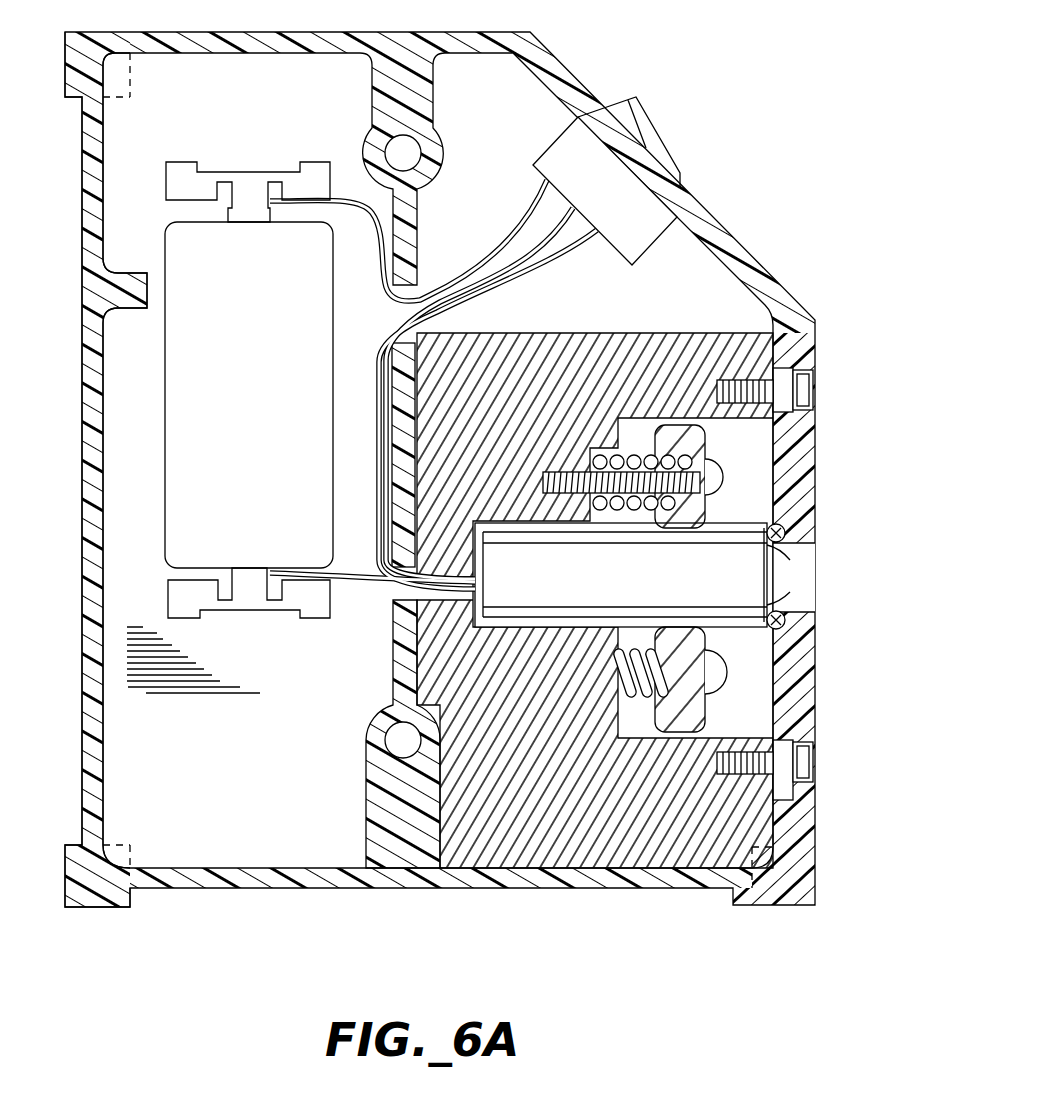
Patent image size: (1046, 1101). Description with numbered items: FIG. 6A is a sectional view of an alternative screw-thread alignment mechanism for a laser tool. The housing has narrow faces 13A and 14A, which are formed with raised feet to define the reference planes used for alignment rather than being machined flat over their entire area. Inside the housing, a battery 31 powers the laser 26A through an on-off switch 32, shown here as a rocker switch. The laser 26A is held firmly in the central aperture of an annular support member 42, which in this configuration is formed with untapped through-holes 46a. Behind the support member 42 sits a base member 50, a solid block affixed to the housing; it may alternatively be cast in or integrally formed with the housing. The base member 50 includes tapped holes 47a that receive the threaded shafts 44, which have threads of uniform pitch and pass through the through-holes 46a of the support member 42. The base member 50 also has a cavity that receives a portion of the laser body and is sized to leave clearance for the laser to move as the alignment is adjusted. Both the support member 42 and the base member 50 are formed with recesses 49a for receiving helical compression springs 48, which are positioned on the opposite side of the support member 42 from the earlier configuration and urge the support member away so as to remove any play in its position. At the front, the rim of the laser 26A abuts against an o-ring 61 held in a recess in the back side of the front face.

The narrow face 13A is at (87, 820).
The narrow face 14A is at (340, 890).
The battery 31 is at (265, 347).
The on-off switch 32 is at (643, 128).
The support member 42 is at (697, 708).
The threaded shaft 44 is at (563, 492).
The untapped through-hole 46a is at (708, 462).
The tapped hole 47a is at (641, 515).
The helical compression spring 48 is at (595, 468).
The recess 49a is at (655, 455).
The base member 50 is at (664, 330).
The o-ring 61 is at (782, 544).
The laser 26A is at (740, 577).